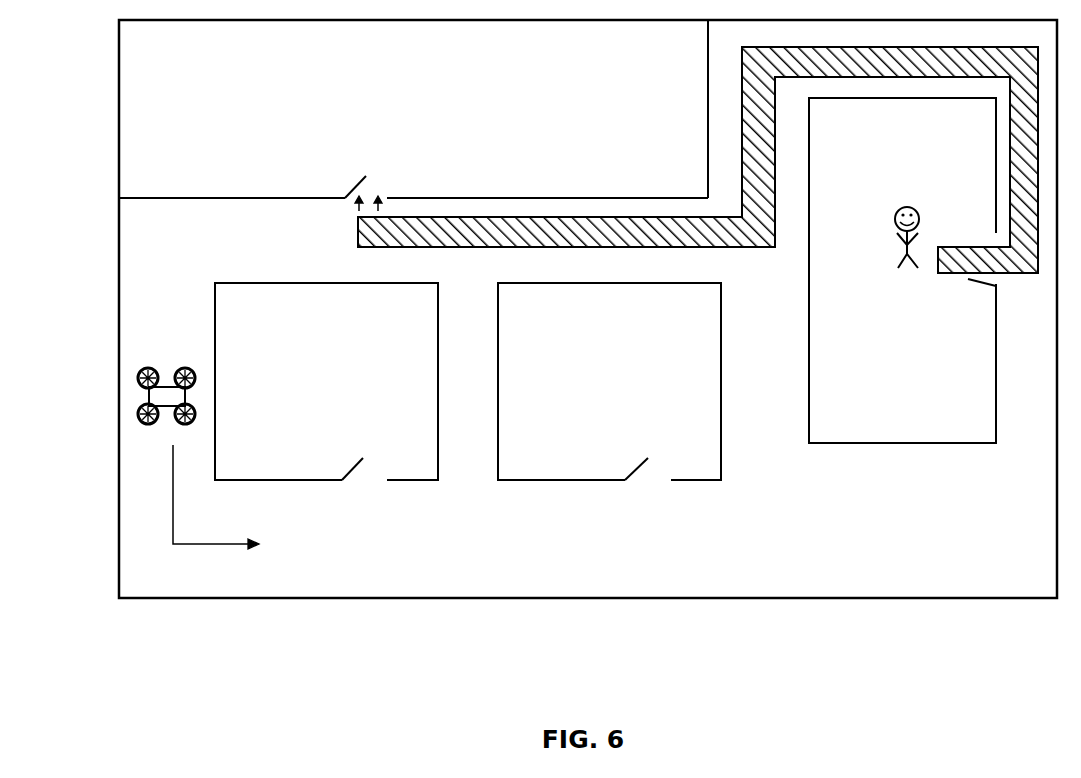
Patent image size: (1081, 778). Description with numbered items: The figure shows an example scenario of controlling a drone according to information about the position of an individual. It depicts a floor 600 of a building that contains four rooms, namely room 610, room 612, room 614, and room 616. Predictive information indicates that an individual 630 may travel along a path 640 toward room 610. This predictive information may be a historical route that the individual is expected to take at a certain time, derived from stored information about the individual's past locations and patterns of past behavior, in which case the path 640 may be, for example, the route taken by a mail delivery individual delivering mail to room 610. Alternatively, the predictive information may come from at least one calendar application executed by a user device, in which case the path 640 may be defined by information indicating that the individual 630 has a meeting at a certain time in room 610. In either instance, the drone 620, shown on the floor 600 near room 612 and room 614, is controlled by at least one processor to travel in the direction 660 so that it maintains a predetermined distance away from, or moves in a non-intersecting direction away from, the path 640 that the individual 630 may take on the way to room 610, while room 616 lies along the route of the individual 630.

The floor 600 is at (119, 310).
The room 610 is at (361, 119).
The room 612 is at (319, 394).
The room 614 is at (610, 394).
The room 616 is at (889, 334).
The drone 620 is at (133, 385).
The individual 630 is at (863, 227).
The path 640 is at (866, 69).
The direction 660 is at (192, 537).